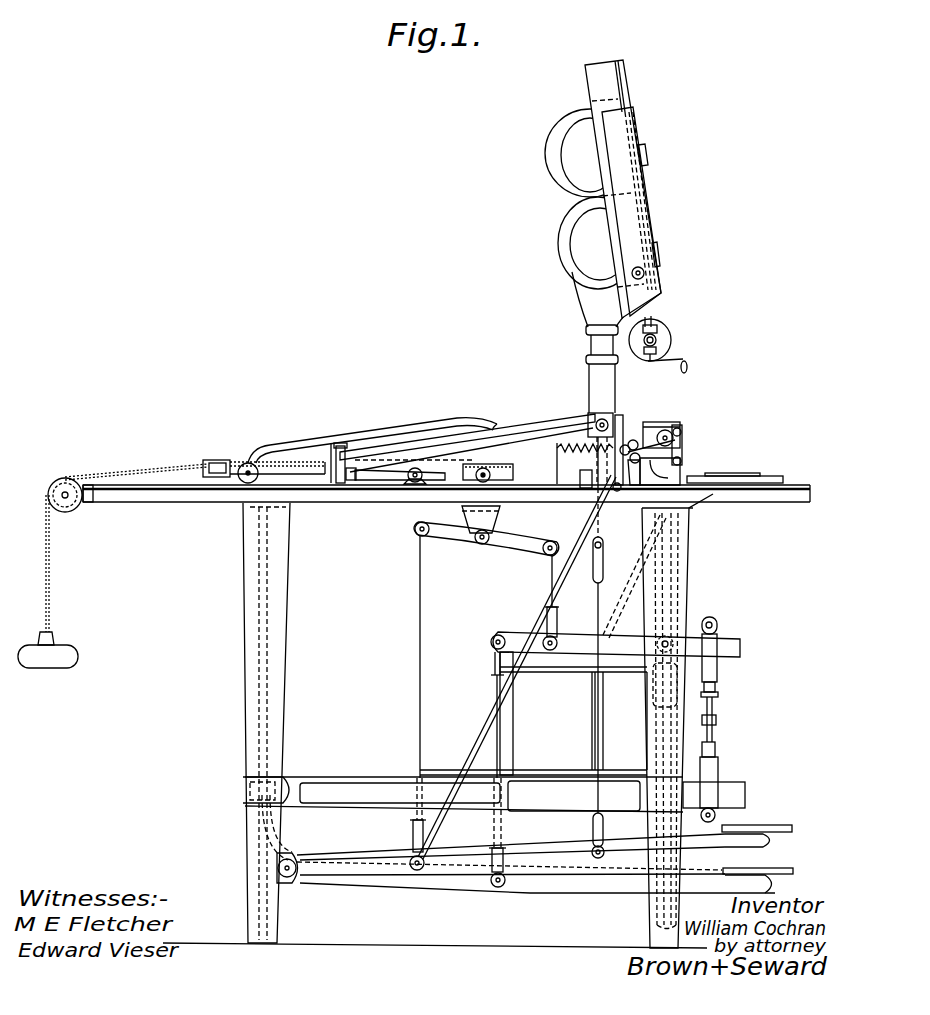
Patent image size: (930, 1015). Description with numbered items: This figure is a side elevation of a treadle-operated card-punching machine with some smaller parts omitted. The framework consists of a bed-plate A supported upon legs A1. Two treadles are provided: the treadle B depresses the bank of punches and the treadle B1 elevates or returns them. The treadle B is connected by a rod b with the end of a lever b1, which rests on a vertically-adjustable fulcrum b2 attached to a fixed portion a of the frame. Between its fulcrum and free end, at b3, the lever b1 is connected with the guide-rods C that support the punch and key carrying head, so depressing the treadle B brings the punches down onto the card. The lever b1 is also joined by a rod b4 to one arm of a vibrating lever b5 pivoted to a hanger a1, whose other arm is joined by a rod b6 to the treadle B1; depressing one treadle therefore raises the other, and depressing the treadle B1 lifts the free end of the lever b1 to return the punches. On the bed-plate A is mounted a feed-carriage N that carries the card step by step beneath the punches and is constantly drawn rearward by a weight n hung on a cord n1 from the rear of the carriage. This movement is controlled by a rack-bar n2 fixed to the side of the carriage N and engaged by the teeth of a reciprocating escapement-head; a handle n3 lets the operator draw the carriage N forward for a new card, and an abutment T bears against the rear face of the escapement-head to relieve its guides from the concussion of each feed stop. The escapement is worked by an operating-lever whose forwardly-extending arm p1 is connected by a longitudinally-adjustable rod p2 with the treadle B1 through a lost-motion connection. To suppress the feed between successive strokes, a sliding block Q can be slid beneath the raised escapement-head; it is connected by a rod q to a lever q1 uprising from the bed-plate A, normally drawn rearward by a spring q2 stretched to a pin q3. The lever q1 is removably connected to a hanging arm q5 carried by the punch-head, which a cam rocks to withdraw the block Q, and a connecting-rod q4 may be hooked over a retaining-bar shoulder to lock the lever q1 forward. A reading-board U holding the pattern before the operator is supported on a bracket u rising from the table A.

The reading-board U is at (633, 115).
The bracket u is at (591, 297).
The spring q2 is at (578, 418).
The forwardly-extending arm p1 is at (523, 437).
The lever q1 is at (628, 432).
The hanging arm q5 is at (628, 445).
The guide-rod C is at (680, 465).
The connecting-rod q4 is at (768, 476).
The pin q3 is at (518, 506).
The rod q is at (528, 522).
The vibrating lever b5 is at (585, 474).
The longitudinally-adjustable rod p2 is at (600, 535).
The hanger a1 is at (480, 545).
The rod b4 is at (550, 577).
The lever b1 is at (570, 640).
The rod b6 is at (425, 632).
The rod b is at (495, 690).
The legs A1 is at (275, 668).
The connection b3 is at (670, 640).
The vertically-adjustable fulcrum b2 is at (715, 690).
The fixed portion of the frame a is at (494, 794).
The treadle B1 is at (755, 823).
The treadle B is at (760, 868).
The cord n1 is at (118, 475).
The weight n is at (68, 662).
The feed-carriage N is at (220, 460).
The rack-bar n2 is at (238, 463).
The handle n3 is at (397, 432).
The abutment T is at (328, 487).
The sliding block Q is at (358, 481).
The bed-plate A is at (382, 498).